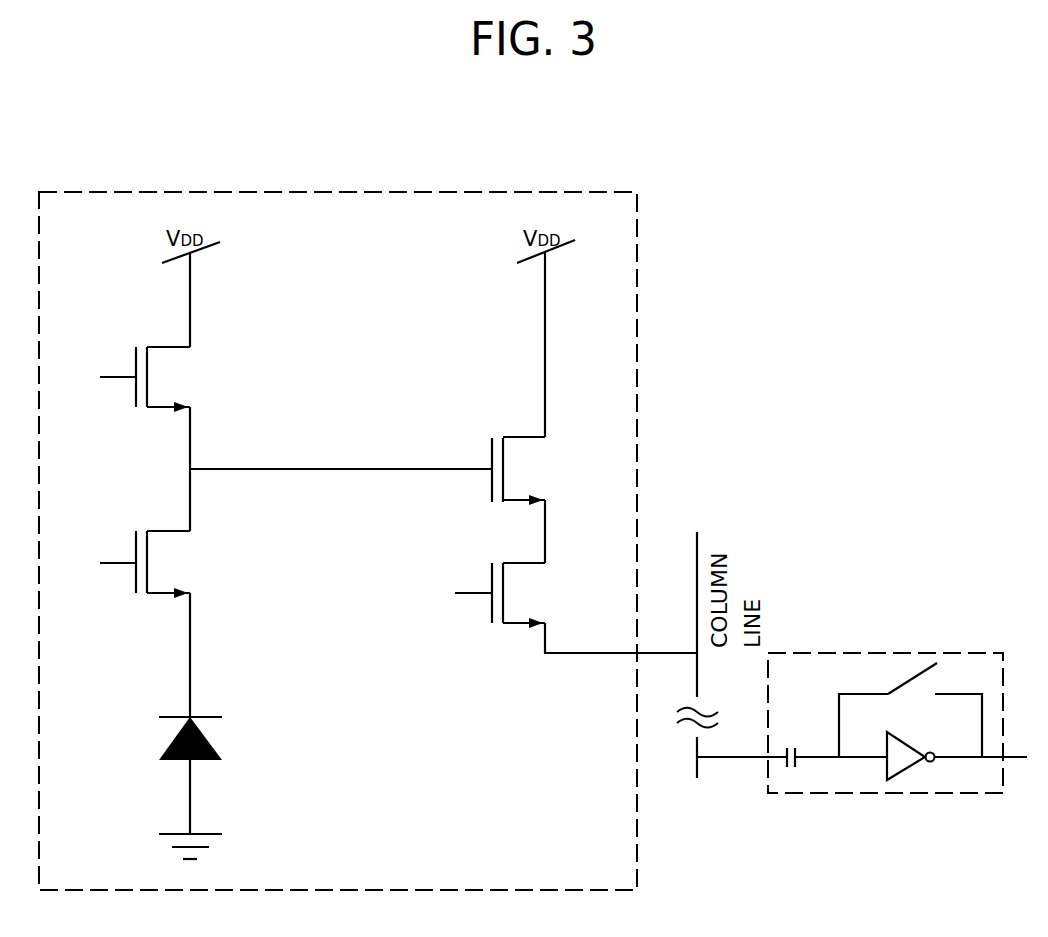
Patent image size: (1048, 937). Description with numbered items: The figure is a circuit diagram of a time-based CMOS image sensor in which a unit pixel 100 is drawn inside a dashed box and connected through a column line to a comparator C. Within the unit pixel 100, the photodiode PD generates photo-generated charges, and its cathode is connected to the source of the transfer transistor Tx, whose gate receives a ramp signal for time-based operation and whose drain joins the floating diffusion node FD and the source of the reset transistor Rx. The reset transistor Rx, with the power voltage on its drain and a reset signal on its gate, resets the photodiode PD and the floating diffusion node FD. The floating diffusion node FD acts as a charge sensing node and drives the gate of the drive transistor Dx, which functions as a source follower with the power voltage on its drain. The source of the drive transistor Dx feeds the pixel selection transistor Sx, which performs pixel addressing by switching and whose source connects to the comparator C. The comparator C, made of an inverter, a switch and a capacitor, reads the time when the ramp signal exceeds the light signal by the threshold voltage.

The unit pixel 100 is at (352, 190).
The comparator C is at (912, 652).
The reset transistor Rx is at (160, 379).
The transfer transistor Tx is at (160, 564).
The drive transistor Dx is at (536, 471).
The pixel selection transistor Sx is at (516, 595).
The photodiode PD is at (170, 775).
The floating diffusion node FD is at (341, 452).